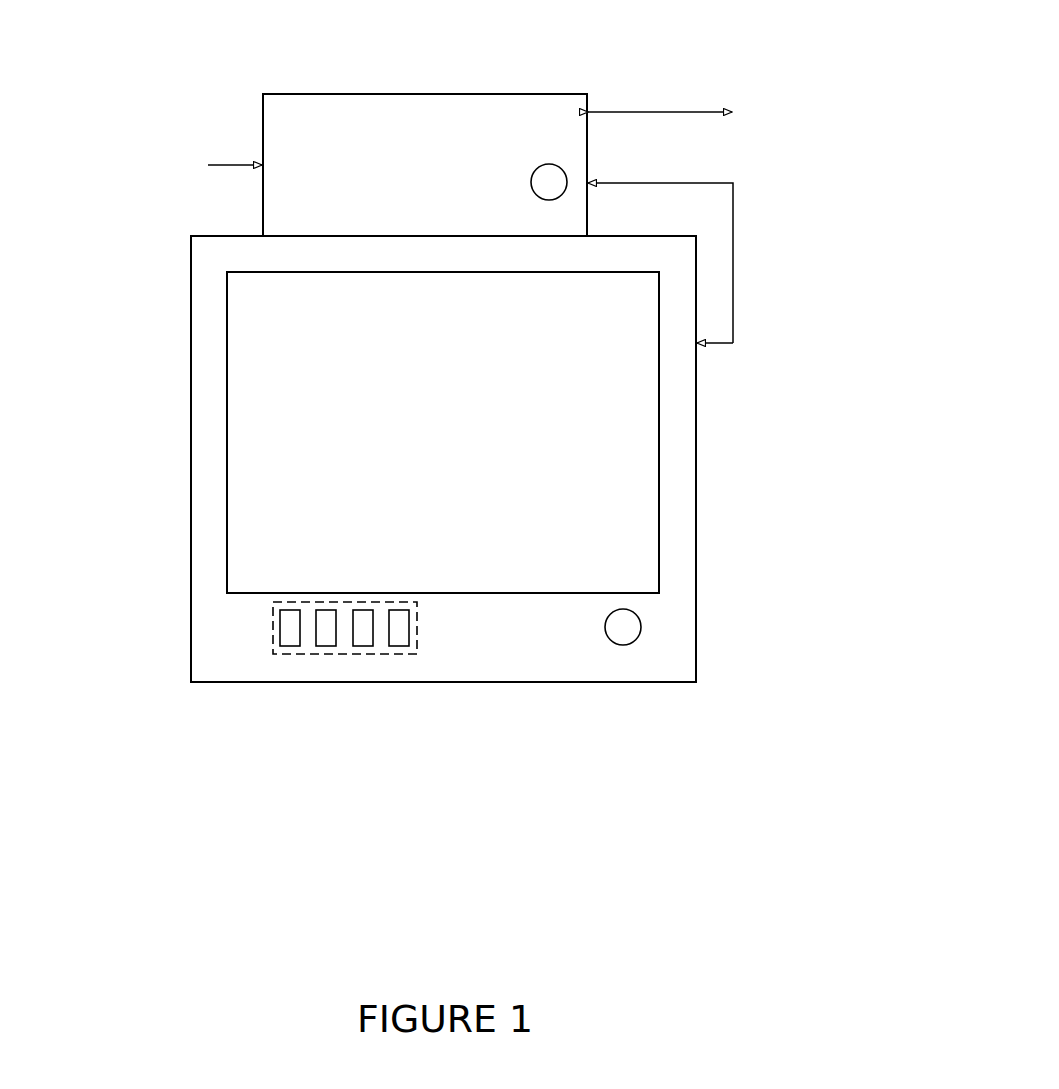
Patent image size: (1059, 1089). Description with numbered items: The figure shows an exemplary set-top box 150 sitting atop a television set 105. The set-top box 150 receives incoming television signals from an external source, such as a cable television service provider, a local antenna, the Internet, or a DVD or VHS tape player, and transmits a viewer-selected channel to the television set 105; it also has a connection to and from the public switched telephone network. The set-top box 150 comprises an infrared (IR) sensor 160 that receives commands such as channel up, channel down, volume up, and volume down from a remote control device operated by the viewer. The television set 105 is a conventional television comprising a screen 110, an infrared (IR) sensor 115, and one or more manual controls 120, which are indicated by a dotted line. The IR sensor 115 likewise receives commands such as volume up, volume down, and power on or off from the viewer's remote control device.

The television set 105 is at (697, 413).
The screen 110 is at (660, 503).
The infrared (IR) sensor 115 is at (623, 646).
The manual controls 120 is at (333, 658).
The set-top box 150 is at (281, 93).
The infrared (IR) sensor 160 is at (549, 163).